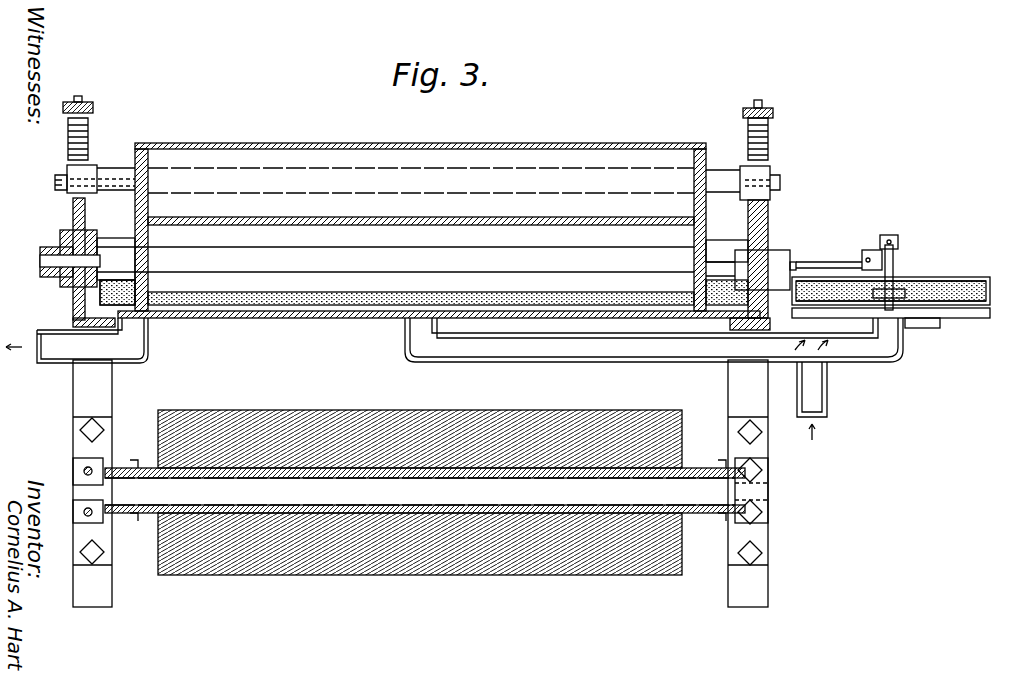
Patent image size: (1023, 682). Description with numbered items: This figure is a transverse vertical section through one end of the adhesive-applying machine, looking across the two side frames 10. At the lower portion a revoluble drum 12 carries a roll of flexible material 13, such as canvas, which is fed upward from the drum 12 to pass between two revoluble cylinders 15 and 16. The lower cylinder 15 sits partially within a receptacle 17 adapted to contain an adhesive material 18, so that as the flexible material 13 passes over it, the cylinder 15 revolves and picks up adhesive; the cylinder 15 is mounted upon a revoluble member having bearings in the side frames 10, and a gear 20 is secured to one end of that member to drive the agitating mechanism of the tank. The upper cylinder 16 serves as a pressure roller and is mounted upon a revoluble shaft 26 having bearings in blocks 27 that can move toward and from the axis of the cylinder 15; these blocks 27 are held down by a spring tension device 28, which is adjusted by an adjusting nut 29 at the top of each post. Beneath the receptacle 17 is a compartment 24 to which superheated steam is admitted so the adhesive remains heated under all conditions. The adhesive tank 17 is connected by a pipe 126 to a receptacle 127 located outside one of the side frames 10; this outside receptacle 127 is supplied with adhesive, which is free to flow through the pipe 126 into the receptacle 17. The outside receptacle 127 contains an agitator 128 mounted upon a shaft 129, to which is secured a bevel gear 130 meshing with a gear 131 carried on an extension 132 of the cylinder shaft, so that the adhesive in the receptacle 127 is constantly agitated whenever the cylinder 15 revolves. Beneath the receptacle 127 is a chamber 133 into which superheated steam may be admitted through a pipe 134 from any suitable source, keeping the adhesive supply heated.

The side frames 10 is at (106, 398).
The revoluble drum 12 is at (480, 410).
The flexible material 13 is at (428, 215).
The cylinder 15 is at (282, 228).
The cylinder 16 is at (375, 148).
The receptacle 17 is at (97, 290).
The adhesive material 18 is at (700, 248).
The gear 20 is at (64, 230).
The compartment 24 is at (265, 318).
The revoluble shaft 26 is at (512, 176).
The blocks 27 is at (95, 234).
The spring tension device 28 is at (90, 140).
The adjusting nut 29 is at (94, 108).
The pipe 126 is at (770, 305).
The receptacle 127 is at (985, 272).
The agitator 128 is at (925, 290).
The shaft 129 is at (893, 264).
The bevel gear 130 is at (898, 243).
The gear 131 is at (875, 250).
The extension 132 is at (806, 262).
The chamber 133 is at (958, 313).
The pipe 134 is at (870, 355).